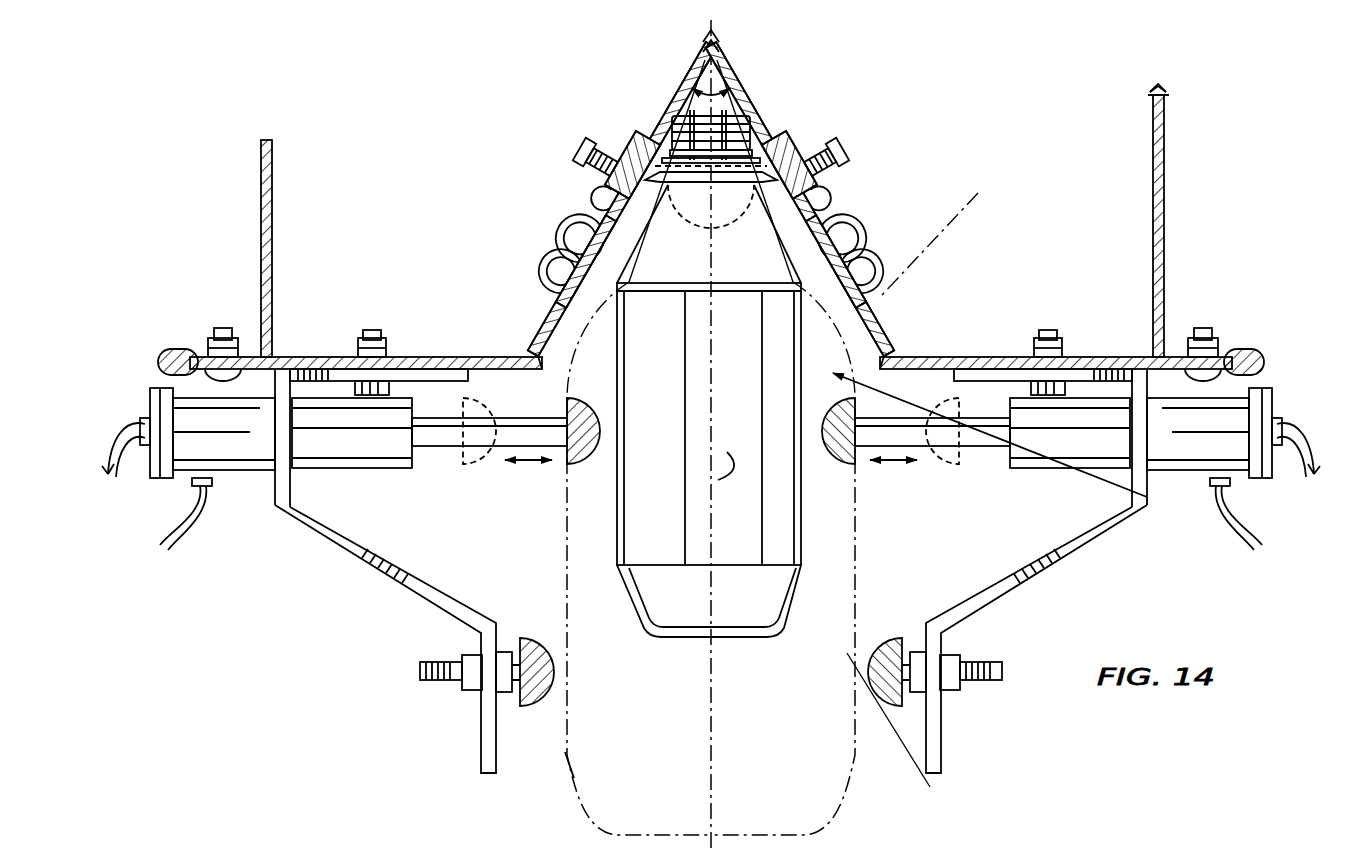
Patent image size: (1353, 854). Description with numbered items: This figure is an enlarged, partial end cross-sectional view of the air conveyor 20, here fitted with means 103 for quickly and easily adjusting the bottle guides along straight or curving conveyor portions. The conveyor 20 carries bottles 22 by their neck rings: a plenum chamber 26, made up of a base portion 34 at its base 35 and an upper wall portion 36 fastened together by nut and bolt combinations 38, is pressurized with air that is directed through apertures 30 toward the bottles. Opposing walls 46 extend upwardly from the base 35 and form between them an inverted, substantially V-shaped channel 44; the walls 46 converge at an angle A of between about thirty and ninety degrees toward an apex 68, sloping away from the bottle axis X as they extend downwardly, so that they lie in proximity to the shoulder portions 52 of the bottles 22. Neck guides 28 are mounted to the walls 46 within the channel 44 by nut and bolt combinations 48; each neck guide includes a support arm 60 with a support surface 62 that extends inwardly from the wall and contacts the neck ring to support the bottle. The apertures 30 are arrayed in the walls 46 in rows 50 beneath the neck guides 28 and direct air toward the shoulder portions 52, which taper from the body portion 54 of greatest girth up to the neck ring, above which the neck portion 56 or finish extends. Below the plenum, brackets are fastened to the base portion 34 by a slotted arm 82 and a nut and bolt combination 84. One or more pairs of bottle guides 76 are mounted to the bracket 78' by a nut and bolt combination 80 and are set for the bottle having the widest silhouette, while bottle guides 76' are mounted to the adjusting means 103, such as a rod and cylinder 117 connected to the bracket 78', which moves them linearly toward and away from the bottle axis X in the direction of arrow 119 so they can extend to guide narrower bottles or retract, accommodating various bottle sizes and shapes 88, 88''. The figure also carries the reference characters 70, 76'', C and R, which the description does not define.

The air conveyor 20 is at (1165, 150).
The bottles 22 is at (530, 788).
The plenum chamber 26 is at (1108, 226).
The neck guides 28 is at (624, 225).
The apertures 30 is at (852, 246).
The base portion 34 is at (462, 356).
The base 35 is at (258, 370).
The upper wall portion 36 is at (272, 238).
The nut and bolt combinations 38 is at (222, 328).
The channel 44 is at (562, 334).
The walls 46 is at (778, 148).
The nut and bolt combinations 48 is at (606, 175).
The rows 50 is at (558, 246).
The shoulder portions 52 is at (707, 222).
The body portions 54 is at (635, 505).
The neck portion 56 is at (740, 125).
The support arm 60 is at (726, 210).
The support surface 62 is at (648, 158).
The apex 68 is at (722, 48).
The plate bend 70 is at (534, 355).
The bottle guides 76 is at (715, 645).
The bottle guides 76' is at (590, 414).
The upper pad 76'' is at (810, 411).
The bracket 78' is at (711, 639).
The nut and bolt combination 80 is at (462, 690).
The slotted arm 82 is at (433, 381).
The nut and bolt combination 84 is at (380, 338).
The bottle sizes and shapes 88 is at (539, 575).
The bottle sizes and shapes 88'' is at (604, 599).
The adjusting means 103 is at (248, 472).
The rod and cylinder 117 is at (362, 470).
The arrow 119 is at (528, 462).
The angle A is at (740, 98).
The center line C is at (956, 200).
The radius R is at (1000, 472).
The axis X is at (730, 454).